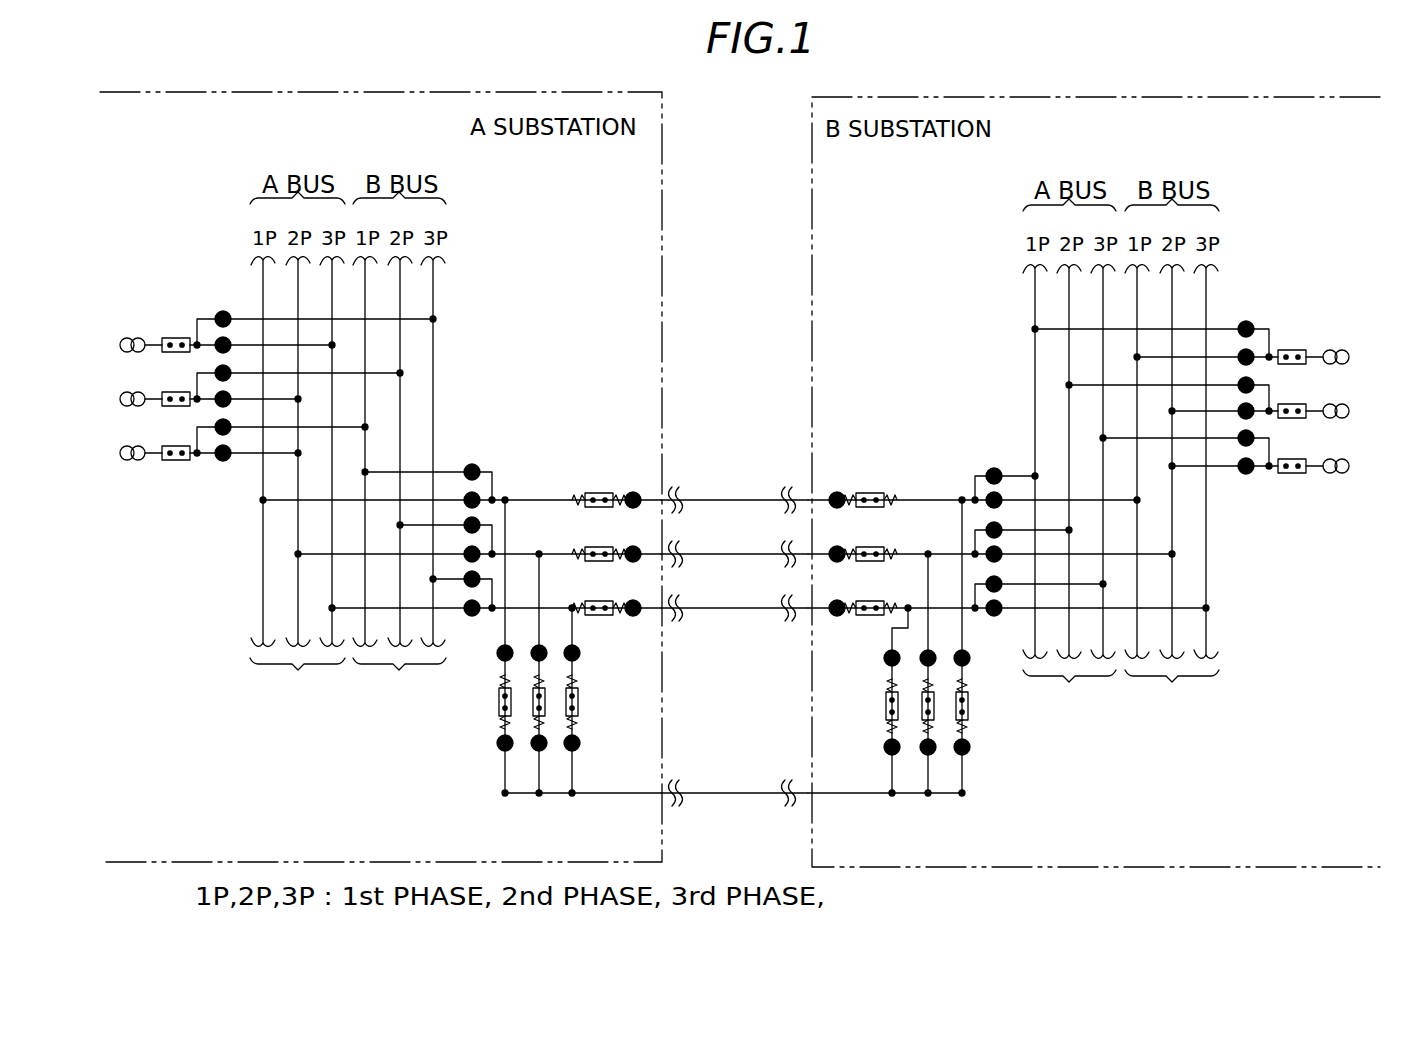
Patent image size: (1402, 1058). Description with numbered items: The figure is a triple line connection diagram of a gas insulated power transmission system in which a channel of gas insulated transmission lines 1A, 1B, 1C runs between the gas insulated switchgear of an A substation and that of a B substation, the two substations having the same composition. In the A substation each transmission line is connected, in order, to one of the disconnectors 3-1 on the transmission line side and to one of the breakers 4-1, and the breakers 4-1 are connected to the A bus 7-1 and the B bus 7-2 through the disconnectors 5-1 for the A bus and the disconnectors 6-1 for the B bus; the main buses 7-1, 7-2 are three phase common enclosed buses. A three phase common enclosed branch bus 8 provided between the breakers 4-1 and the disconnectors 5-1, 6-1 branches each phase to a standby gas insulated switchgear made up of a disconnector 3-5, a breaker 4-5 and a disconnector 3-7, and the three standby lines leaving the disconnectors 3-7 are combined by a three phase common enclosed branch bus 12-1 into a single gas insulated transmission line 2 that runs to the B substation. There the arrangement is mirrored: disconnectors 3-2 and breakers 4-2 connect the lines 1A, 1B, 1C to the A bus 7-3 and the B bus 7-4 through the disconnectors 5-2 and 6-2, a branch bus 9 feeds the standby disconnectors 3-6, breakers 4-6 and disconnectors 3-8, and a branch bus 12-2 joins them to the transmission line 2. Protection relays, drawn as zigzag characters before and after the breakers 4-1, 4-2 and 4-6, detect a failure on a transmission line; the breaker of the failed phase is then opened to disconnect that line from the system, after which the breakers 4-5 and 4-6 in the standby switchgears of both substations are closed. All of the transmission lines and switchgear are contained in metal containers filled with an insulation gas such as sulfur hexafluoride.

The gas insulated transmission line 1A is at (695, 497).
The gas insulated transmission line 1B is at (733, 551).
The gas insulated transmission line 1C is at (718, 612).
The gas insulated transmission line 2 is at (742, 796).
The disconnector 3-1 is at (633, 490).
The circuit breaker 3-2 is at (836, 491).
The disconnector 3-5 is at (500, 662).
The circuit breaker 3-6 is at (966, 665).
The disconnector 3-7 is at (498, 753).
The circuit breaker 3-8 is at (966, 755).
The breaker 4-1 is at (597, 488).
The breaker 4-2 is at (868, 488).
The breaker 4-5 is at (497, 712).
The breaker 4-6 is at (968, 719).
The disconnector for the A bus 5-1 is at (492, 486).
The connecting conductor 5-2 is at (989, 477).
The disconnector for the B bus 6-1 is at (472, 463).
The disconnecting switch 6-2 is at (999, 500).
The main bus 7-1 is at (298, 670).
The main bus 7-2 is at (399, 670).
The A bus of B substation 7-3 is at (1070, 682).
The B bus of B substation 7-4 is at (1173, 682).
The branch bus 8 is at (504, 634).
The branch connection 9 is at (962, 633).
The branch bus 12-1 is at (530, 796).
The bypass connection line 12-2 is at (913, 797).